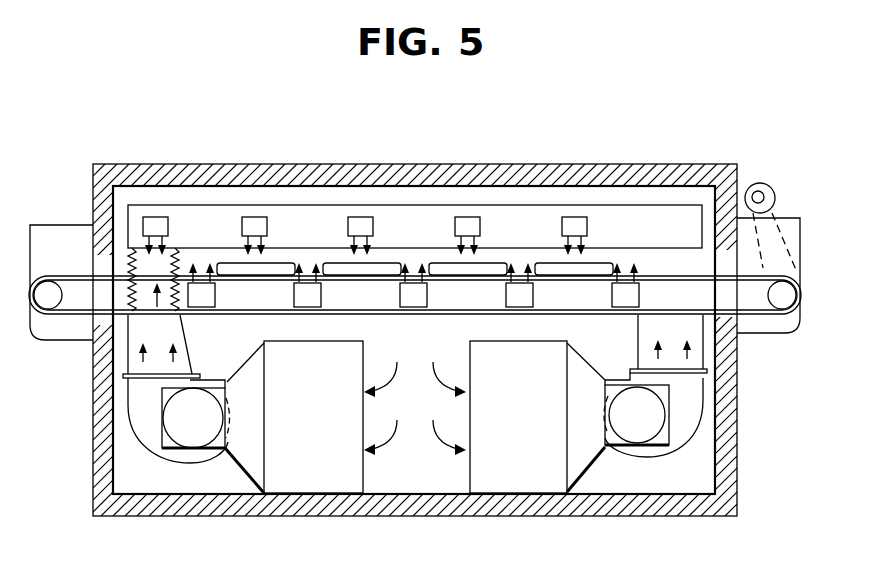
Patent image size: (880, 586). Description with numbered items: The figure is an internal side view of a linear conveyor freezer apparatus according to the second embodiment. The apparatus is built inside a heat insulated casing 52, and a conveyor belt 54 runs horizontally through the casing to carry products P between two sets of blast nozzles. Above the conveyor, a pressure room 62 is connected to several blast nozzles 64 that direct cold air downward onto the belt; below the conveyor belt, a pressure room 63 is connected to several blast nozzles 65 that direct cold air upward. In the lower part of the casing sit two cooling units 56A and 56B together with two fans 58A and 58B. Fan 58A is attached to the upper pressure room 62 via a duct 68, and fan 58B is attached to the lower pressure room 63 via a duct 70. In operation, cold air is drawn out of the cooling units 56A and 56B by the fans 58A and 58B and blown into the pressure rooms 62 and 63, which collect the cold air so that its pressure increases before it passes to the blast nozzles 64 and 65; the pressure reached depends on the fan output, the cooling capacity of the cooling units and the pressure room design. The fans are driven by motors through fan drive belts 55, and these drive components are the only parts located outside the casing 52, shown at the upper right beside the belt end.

The heat insulated casing 52 is at (222, 155).
The conveyor belt 54 is at (58, 255).
The fan drive belt 55 is at (778, 192).
The cooling unit 56A is at (308, 482).
The cooling unit 56B is at (510, 478).
The fan 58A is at (173, 425).
The fan 58B is at (638, 433).
The pressure room 62 is at (310, 205).
The pressure room 63 is at (705, 292).
The blast nozzle 64 is at (468, 217).
The blast nozzle 65 is at (644, 305).
The duct 68 is at (118, 356).
The duct 70 is at (705, 352).
The printed circuit board P is at (607, 263).